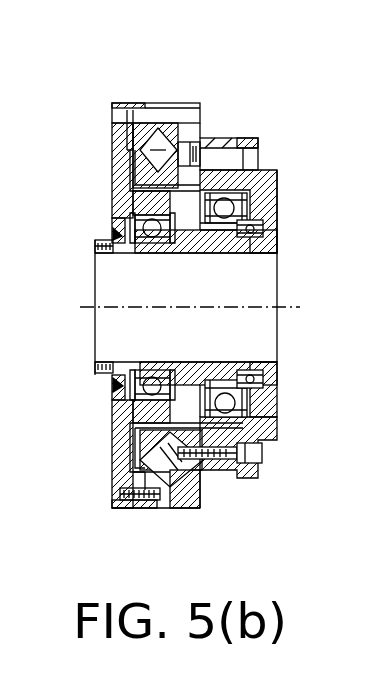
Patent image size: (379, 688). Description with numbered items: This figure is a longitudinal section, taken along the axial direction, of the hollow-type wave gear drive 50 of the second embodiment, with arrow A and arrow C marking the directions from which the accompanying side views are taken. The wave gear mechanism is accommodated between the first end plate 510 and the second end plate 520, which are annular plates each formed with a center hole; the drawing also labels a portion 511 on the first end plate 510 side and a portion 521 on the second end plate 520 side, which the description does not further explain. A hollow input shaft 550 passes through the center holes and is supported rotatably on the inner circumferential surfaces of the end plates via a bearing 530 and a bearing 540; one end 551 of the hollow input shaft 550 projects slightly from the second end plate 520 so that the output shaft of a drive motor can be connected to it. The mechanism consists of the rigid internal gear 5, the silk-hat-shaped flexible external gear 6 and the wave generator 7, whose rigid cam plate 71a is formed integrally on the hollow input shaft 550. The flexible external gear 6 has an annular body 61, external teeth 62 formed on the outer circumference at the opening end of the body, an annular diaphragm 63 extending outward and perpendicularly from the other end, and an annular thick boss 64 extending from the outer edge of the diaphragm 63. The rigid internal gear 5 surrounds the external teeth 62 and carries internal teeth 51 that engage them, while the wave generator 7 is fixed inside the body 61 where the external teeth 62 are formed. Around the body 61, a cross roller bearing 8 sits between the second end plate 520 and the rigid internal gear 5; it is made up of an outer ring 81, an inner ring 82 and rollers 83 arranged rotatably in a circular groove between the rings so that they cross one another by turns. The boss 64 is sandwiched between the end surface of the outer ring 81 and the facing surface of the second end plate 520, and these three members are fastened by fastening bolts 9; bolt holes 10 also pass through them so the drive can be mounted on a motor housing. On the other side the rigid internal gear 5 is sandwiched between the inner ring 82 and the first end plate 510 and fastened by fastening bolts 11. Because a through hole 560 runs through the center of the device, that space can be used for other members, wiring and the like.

The wave gear drive 50 is at (312, 80).
The cross roller bearing 8 is at (213, 127).
The bolt holes 10 is at (158, 117).
The outer ring 81 is at (134, 143).
The inner ring 82 is at (110, 145).
The rollers 83 is at (178, 103).
The rigid internal gear 5 is at (218, 157).
The internal teeth 51 is at (268, 162).
The first end plate 510 is at (272, 192).
The small bearing 511 is at (270, 223).
The second end plate 520 is at (112, 140).
The inner wall piece 521 is at (115, 233).
The bearing 540 is at (138, 252).
The bearing 530 is at (258, 247).
The through hole 560 is at (205, 348).
The arrow A is at (76, 307).
The arrow C is at (293, 307).
The one end of hollow input shaft 551 is at (105, 362).
The hollow input shaft 550 is at (110, 374).
The rigid cam plate 71a is at (243, 362).
The wave generator 7 is at (268, 412).
The fastening bolts 11 is at (258, 453).
The external teeth 62 is at (212, 463).
The flexible external gear 6 is at (173, 500).
The annular body 61 is at (143, 510).
The annular diaphragm 63 is at (113, 452).
The annular thick boss 64 is at (132, 483).
The fastening bolts 9 is at (115, 498).